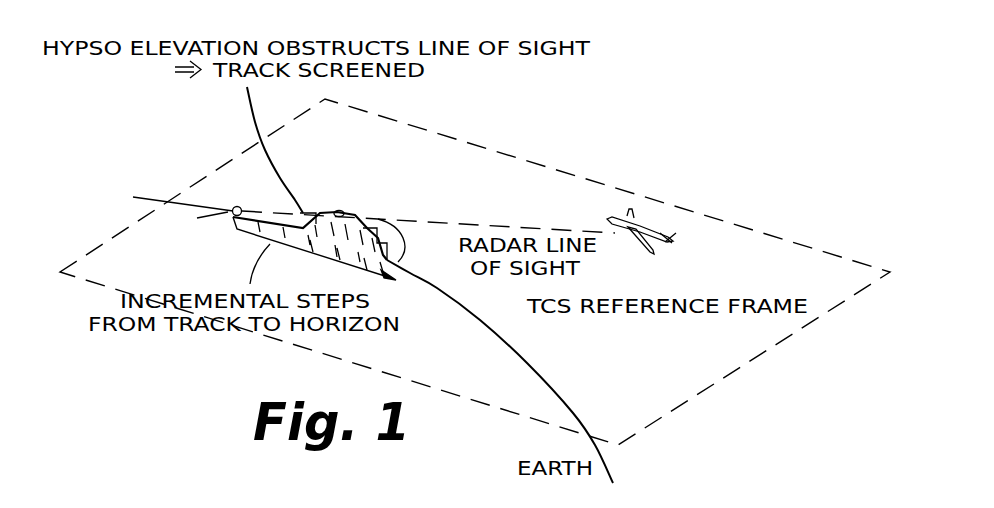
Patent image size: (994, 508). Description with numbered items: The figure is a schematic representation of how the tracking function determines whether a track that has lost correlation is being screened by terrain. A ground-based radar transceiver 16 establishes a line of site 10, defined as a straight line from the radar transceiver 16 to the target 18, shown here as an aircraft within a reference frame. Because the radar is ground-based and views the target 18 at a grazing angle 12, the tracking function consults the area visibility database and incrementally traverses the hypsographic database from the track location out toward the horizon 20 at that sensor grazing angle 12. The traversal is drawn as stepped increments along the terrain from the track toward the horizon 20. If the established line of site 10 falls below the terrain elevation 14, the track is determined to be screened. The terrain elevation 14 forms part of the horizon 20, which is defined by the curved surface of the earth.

The line of site 10 is at (473, 223).
The grazing angle 12 is at (407, 246).
The terrain elevation 14 is at (344, 213).
The radar transceiver 16 is at (240, 206).
The target 18 is at (673, 242).
The horizon 20 is at (485, 323).